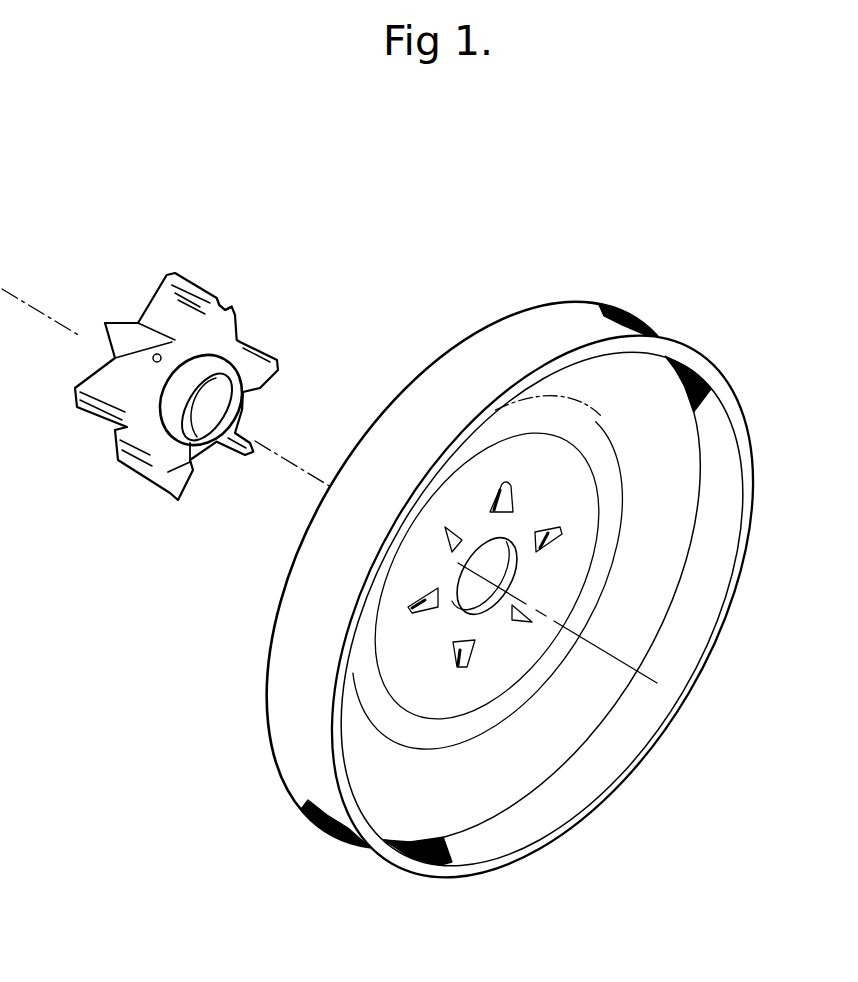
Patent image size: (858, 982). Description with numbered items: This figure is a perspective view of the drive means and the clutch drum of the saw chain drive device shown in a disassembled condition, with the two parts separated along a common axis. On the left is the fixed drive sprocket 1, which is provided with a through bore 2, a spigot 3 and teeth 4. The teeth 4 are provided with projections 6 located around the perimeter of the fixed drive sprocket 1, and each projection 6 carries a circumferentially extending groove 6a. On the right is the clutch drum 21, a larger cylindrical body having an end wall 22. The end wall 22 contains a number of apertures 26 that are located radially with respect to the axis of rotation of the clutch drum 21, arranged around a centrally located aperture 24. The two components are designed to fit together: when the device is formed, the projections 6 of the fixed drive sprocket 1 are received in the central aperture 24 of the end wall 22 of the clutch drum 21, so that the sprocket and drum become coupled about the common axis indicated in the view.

The fixed drive sprocket 1 is at (318, 281).
The through bore 2 is at (210, 404).
The spigot 3 is at (206, 449).
The teeth 4 is at (143, 457).
The projections 6 is at (243, 300).
The circumferentially extending groove 6a is at (226, 298).
The clutch drum 21 is at (715, 360).
The end wall 22 is at (660, 515).
The centrally located aperture 24 is at (508, 567).
The apertures 26 is at (513, 492).